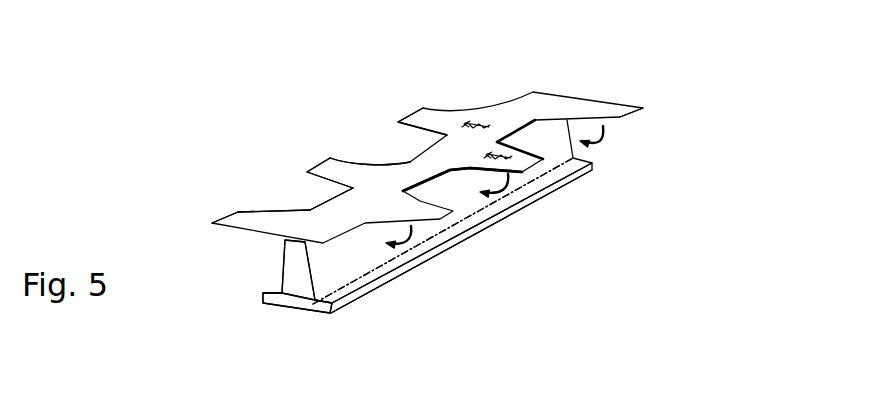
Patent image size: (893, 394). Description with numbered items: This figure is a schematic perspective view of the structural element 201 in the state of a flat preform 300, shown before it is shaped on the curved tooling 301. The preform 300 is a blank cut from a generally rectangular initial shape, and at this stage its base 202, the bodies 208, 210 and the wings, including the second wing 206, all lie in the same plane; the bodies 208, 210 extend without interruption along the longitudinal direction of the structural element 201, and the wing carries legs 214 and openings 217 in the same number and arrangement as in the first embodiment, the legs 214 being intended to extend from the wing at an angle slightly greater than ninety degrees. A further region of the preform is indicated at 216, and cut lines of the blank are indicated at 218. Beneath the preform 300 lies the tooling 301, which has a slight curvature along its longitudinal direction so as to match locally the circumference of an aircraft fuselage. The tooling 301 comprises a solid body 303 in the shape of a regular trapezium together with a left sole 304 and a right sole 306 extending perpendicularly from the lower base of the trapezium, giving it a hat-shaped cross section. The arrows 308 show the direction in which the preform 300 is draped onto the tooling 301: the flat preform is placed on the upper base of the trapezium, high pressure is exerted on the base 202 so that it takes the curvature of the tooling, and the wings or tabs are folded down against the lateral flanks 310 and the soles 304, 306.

The structural element 201 is at (560, 73).
The base 202 is at (397, 173).
The second wing 206 is at (273, 192).
The body 208 is at (448, 197).
The body 210 is at (378, 187).
The leg 214 is at (468, 238).
The end portion of cover plate 216 is at (228, 222).
The opening 217 is at (543, 141).
The cut lines 218 is at (447, 97).
The preform 300 is at (635, 110).
The tooling 301 is at (266, 327).
The solid body 303 is at (300, 292).
The left sole 304 is at (272, 290).
The right sole 306 is at (363, 297).
The arrows 308 is at (435, 253).
The lateral flank 310 is at (283, 264).